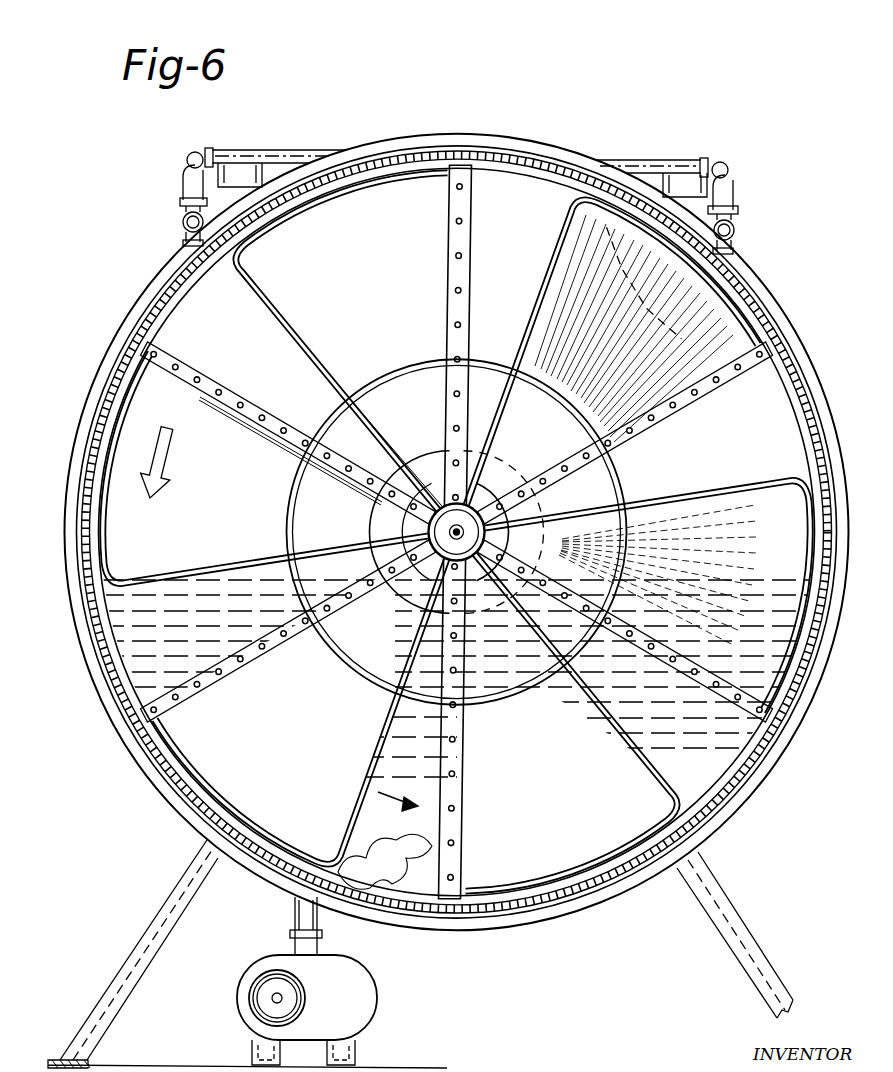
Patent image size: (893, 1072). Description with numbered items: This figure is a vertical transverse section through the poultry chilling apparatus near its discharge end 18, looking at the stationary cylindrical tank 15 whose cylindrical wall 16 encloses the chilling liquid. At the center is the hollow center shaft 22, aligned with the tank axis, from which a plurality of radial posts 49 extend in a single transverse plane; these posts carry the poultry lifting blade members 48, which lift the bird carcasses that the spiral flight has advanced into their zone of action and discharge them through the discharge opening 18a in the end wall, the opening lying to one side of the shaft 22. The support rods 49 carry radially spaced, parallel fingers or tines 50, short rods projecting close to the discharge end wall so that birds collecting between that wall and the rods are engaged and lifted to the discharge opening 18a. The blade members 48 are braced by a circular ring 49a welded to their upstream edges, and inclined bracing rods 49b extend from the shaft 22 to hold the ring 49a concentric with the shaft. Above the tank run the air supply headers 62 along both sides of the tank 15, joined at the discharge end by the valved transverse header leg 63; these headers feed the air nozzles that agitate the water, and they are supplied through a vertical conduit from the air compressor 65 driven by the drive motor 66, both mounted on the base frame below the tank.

The cylindrical tank 15 is at (117, 318).
The cylindrical wall 16 is at (162, 292).
The discharge end 18 is at (520, 254).
The discharge opening 18a is at (665, 478).
The hollow center shaft 22 is at (376, 515).
The poultry lifting blade members 48 is at (364, 269).
The radial posts 49 is at (556, 584).
The circular ring 49a is at (418, 364).
The inclined bracing rods 49b is at (390, 425).
The fingers or tines 50 is at (228, 382).
The air supply headers 62 is at (182, 224).
The transverse header leg 63 is at (662, 178).
The air compressor 65 is at (372, 996).
The drive motor 66 is at (264, 998).